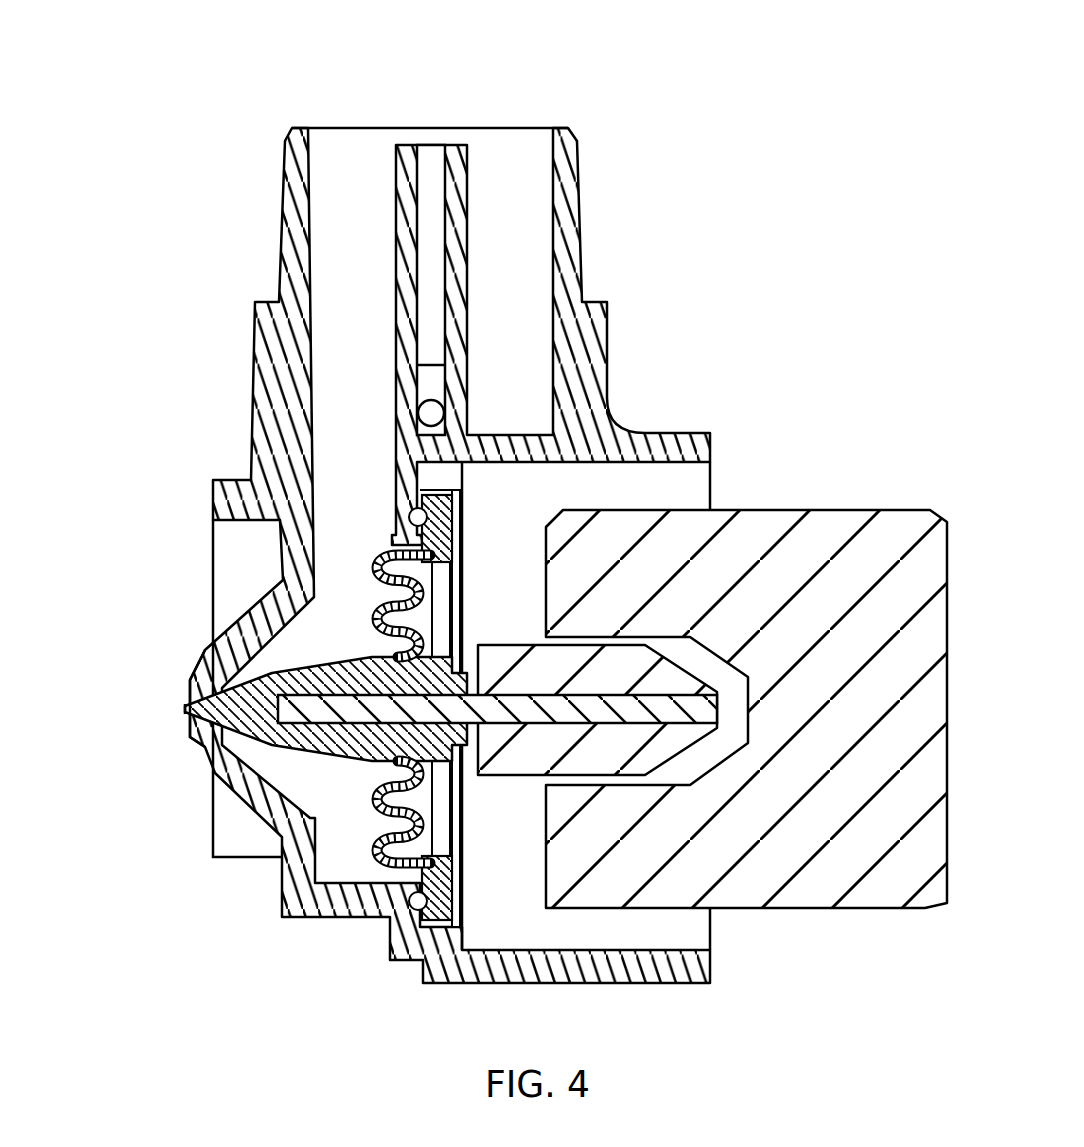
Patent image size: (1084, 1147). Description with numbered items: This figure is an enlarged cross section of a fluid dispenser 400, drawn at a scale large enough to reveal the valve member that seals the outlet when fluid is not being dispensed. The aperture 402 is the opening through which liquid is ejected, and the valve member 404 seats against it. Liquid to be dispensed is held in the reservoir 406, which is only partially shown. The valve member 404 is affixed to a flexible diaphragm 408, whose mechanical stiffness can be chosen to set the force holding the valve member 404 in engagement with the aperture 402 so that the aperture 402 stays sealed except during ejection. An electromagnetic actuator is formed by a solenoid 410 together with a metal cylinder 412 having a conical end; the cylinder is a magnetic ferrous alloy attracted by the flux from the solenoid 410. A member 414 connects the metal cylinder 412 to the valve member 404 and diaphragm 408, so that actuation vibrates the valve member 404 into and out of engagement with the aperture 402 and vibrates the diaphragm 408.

The fluid dispenser 400 is at (724, 193).
The aperture 402 is at (172, 729).
The valve member 404 is at (195, 738).
The reservoir 406 is at (348, 330).
The flexible diaphragm 408 is at (390, 782).
The solenoid 410 is at (850, 873).
The metal cylinder 412 is at (625, 745).
The connecting member 414 is at (630, 705).